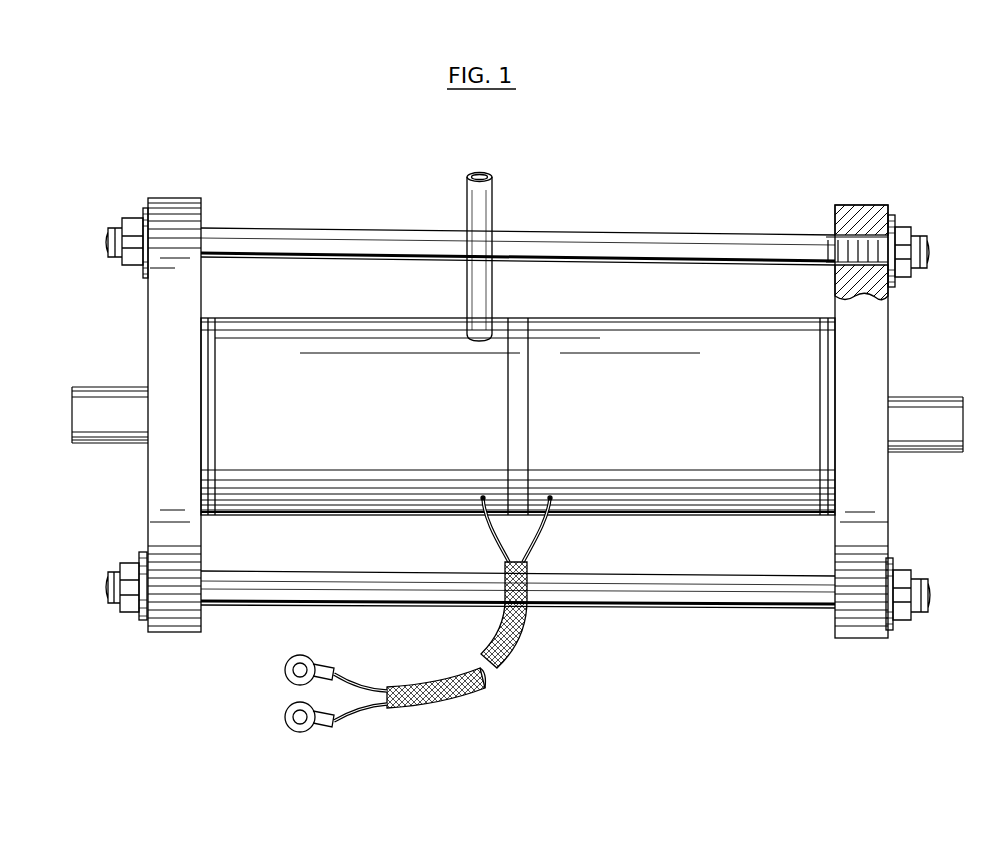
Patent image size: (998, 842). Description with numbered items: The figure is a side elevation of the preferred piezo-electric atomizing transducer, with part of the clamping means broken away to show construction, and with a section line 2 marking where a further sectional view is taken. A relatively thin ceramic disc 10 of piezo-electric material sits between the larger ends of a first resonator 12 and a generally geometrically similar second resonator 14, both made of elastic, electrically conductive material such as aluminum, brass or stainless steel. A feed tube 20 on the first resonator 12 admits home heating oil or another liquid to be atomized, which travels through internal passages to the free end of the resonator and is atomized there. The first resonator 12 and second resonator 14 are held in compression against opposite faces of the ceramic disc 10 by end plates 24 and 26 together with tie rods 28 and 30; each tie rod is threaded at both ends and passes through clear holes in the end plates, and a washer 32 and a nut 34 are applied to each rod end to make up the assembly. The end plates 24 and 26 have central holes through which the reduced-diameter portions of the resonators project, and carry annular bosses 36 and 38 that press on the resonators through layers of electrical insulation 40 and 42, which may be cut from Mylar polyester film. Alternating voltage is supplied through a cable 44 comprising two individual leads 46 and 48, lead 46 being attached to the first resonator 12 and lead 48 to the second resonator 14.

The section line 2- 2 is at (52, 683).
The ceramic disc 10 is at (511, 322).
The first resonator 12 is at (339, 314).
The second resonator 14 is at (669, 325).
The feed tube 20 is at (492, 208).
The end plate 24 is at (138, 326).
The end plate 26 is at (896, 345).
The tie rod 28 is at (601, 231).
The tie rod 30 is at (620, 608).
The washer 32 is at (143, 210).
The nut 34 is at (122, 228).
The annular boss 36 is at (208, 318).
The annular boss 38 is at (828, 318).
The layer of electrical insulation 40 is at (216, 427).
The layer of electrical insulation 42 is at (819, 421).
The cable 44 is at (478, 704).
The lead 46 is at (502, 548).
The lead 48 is at (528, 548).